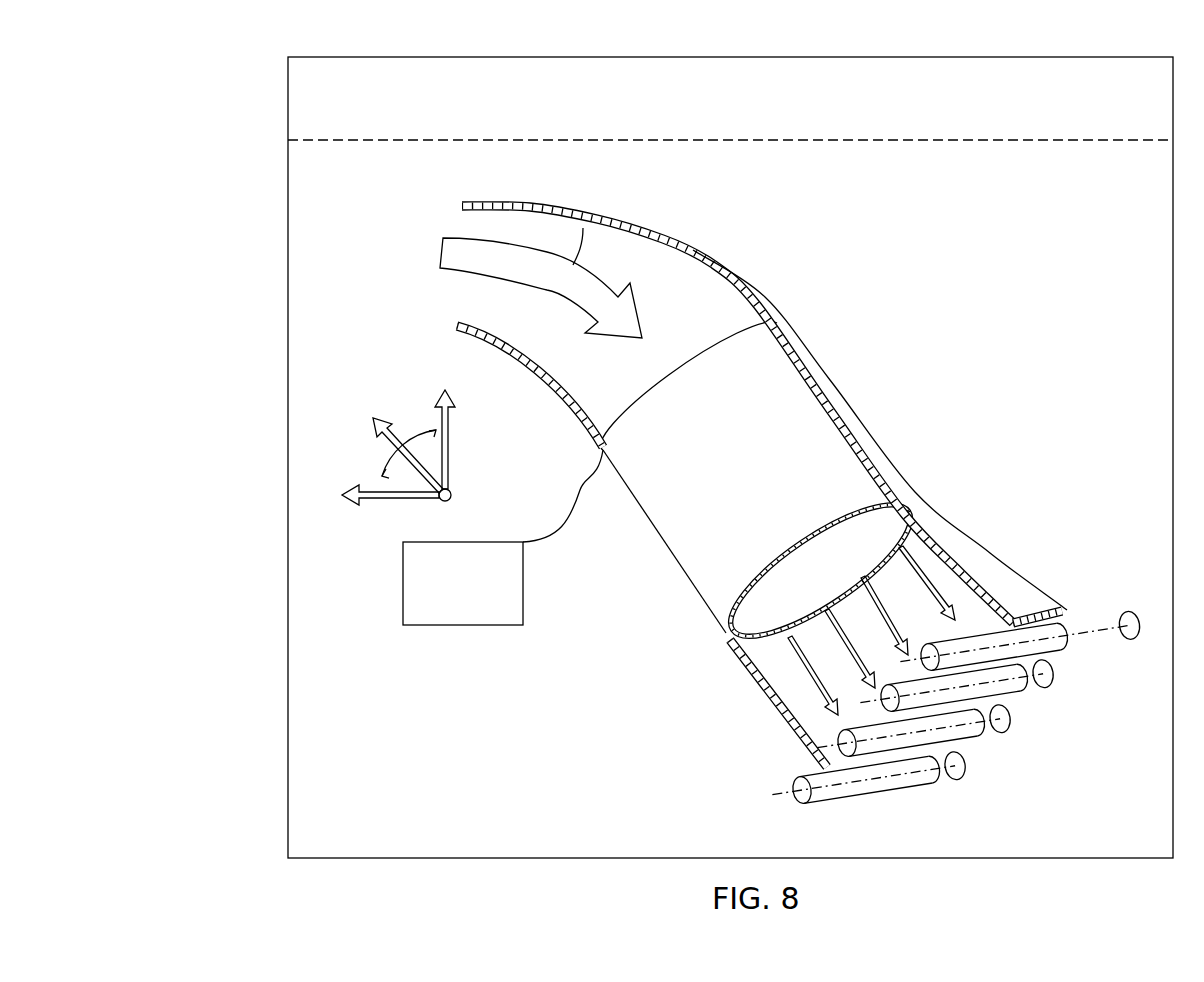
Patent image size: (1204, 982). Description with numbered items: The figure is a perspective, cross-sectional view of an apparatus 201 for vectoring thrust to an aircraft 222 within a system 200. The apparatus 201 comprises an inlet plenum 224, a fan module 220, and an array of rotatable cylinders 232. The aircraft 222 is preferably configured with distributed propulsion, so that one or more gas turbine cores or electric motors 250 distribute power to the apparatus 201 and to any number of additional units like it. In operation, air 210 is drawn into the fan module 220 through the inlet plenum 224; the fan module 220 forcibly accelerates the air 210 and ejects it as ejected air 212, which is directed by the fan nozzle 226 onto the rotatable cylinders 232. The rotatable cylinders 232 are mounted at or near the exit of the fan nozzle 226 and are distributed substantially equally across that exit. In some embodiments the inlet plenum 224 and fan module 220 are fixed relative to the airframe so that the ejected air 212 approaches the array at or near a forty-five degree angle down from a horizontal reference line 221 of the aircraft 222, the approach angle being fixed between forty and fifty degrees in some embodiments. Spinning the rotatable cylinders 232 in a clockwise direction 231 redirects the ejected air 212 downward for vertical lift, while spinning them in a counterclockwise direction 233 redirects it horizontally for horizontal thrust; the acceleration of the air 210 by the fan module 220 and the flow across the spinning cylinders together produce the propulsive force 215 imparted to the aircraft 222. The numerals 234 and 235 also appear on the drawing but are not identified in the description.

The system 200 is at (247, 82).
The apparatus 201 is at (914, 250).
The air 210 is at (447, 270).
The ejected air 212 is at (790, 693).
The propulsive force 215 is at (357, 406).
The fan module 220 is at (650, 525).
The horizontal reference line 221 is at (1082, 140).
The aircraft 222 is at (533, 691).
The inlet plenum 224 is at (693, 250).
The fan nozzle 226 is at (1020, 592).
The clockwise direction 231 is at (1062, 641).
The rotatable cylinders 232 is at (1053, 674).
The counterclockwise direction 233 is at (1126, 615).
The roller 234 is at (862, 785).
The roller rotation axis 235 is at (800, 773).
The electric motors 250 is at (476, 594).